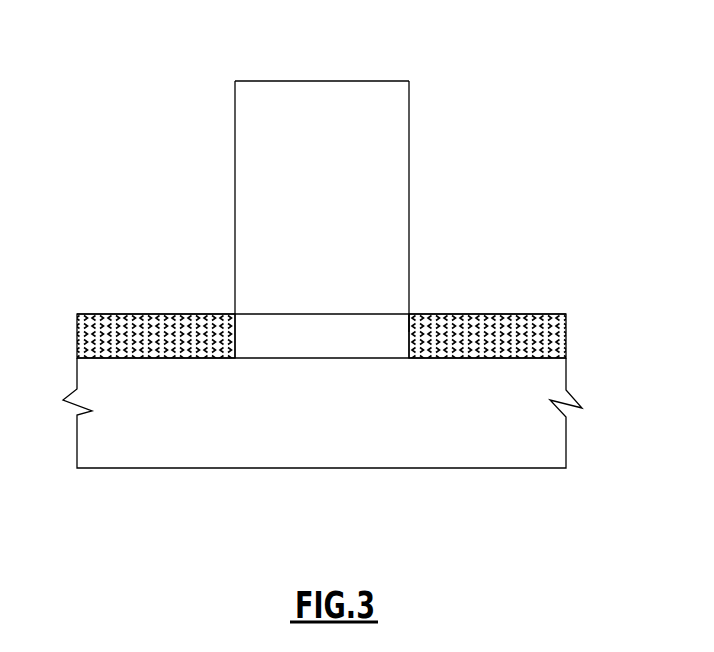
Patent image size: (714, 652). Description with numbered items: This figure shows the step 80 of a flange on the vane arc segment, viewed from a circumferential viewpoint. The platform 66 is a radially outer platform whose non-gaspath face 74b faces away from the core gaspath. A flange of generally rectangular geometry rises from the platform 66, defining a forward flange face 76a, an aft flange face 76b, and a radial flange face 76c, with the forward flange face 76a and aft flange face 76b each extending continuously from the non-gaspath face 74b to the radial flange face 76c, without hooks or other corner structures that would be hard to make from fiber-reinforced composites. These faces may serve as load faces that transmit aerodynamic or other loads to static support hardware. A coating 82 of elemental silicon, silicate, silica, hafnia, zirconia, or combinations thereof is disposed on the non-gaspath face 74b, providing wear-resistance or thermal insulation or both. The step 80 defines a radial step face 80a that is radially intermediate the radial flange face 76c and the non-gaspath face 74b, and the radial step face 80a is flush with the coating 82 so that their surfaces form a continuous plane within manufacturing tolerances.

The first platform 66 is at (510, 452).
The non-gaspath face 74b is at (536, 354).
The forward flange face 76a is at (235, 190).
The aft flange face 76b is at (409, 128).
The radial flange face 76c is at (335, 81).
The step 80 is at (411, 332).
The radial step face 80a is at (376, 314).
The coating 82 is at (163, 338).